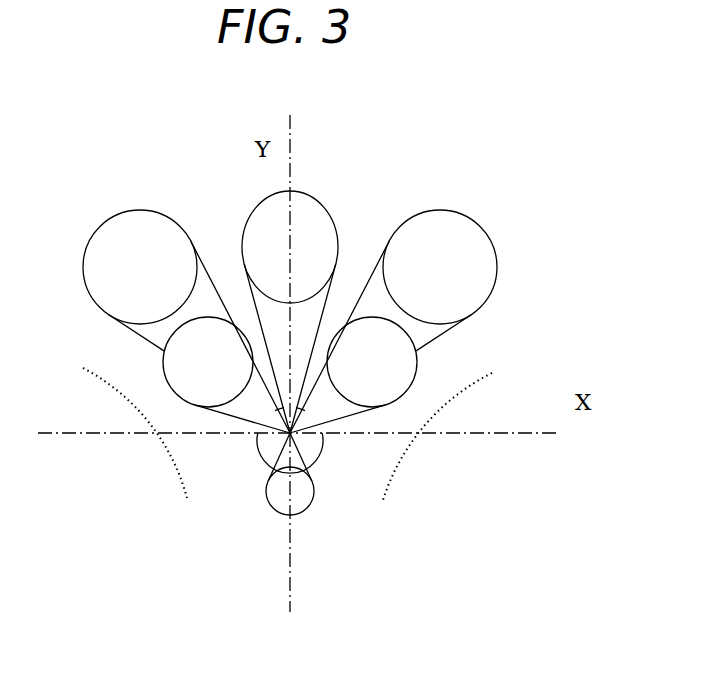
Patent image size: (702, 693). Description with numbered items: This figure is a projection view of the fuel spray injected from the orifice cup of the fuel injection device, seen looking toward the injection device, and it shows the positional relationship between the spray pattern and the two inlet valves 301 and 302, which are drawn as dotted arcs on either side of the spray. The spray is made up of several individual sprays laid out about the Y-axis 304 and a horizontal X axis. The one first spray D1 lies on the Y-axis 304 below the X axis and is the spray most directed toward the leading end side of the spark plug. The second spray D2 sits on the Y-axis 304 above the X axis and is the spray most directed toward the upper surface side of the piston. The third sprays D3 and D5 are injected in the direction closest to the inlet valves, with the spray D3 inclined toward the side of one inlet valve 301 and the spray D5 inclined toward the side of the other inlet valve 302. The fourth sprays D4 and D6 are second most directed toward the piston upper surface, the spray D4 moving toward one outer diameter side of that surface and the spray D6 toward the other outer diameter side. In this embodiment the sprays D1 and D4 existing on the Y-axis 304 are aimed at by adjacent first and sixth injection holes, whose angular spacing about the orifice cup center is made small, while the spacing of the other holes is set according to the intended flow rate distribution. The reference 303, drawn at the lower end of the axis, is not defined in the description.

The inlet valve 301 is at (148, 423).
The inlet valve 302 is at (460, 392).
The Y axis (lower part) 303 is at (295, 532).
The Y-axis 304 is at (297, 130).
The first spray D1 is at (310, 474).
The second spray D2 is at (274, 312).
The third spray D3 is at (205, 375).
The fourth spray D4 is at (186, 303).
The third spray D5 is at (372, 375).
The fourth spray D6 is at (393, 302).